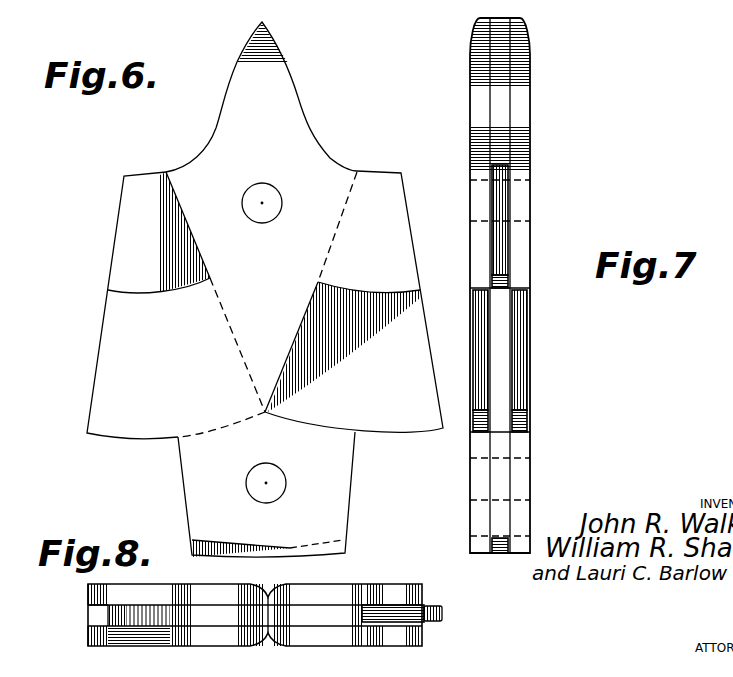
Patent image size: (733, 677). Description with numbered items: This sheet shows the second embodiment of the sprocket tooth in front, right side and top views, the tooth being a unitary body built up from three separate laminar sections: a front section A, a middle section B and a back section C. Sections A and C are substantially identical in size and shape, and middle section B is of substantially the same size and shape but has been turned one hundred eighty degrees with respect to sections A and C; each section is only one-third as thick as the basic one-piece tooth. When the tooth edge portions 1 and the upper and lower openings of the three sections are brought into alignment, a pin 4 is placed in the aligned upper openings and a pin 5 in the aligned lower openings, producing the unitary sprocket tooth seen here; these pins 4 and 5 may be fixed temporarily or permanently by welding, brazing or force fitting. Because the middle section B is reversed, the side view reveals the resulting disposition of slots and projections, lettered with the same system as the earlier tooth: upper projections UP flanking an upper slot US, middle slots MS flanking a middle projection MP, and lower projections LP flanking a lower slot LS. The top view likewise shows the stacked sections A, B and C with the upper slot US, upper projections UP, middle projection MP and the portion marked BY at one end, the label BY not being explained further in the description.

In FIG. 6, the tooth edge portion 1 is at (254, 34).
In FIG. 7, the tooth edge portion 1 is at (550, 30).
In FIG. 8, the tooth edge portion 1 is at (268, 586).
In FIG. 6, the pin 4 is at (263, 212).
In FIG. 6, the pin 5 is at (264, 487).
In FIG. 7, the front section A is at (477, 106).
In FIG. 7, the middle section B is at (498, 106).
In FIG. 7, the back section C is at (518, 106).
In FIG. 7, the upper projection UP is at (500, 234).
In FIG. 8, the upper projection UP is at (412, 590).
In FIG. 7, the upper slot US is at (500, 226).
In FIG. 8, the upper slot US is at (372, 590).
In FIG. 7, the middle projection MP is at (500, 378).
In FIG. 8, the middle projection MP is at (440, 618).
In FIG. 7, the middle slot MS is at (500, 361).
In FIG. 7, the lower projection LP is at (500, 498).
In FIG. 7, the lower slot LS is at (500, 531).
In FIG. 8, the end piece BY is at (445, 609).